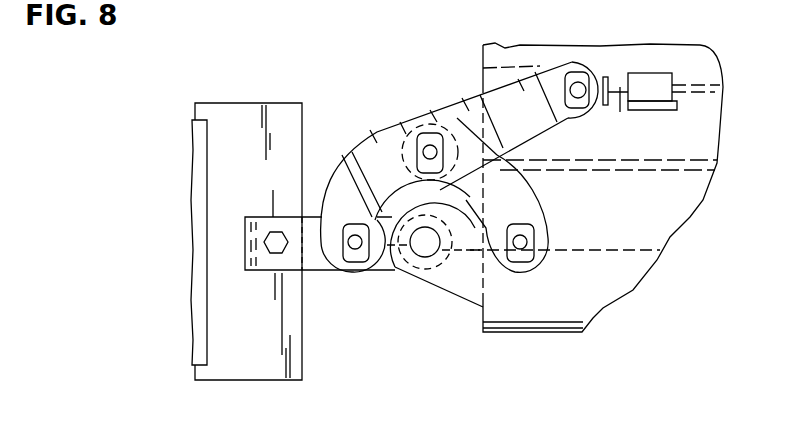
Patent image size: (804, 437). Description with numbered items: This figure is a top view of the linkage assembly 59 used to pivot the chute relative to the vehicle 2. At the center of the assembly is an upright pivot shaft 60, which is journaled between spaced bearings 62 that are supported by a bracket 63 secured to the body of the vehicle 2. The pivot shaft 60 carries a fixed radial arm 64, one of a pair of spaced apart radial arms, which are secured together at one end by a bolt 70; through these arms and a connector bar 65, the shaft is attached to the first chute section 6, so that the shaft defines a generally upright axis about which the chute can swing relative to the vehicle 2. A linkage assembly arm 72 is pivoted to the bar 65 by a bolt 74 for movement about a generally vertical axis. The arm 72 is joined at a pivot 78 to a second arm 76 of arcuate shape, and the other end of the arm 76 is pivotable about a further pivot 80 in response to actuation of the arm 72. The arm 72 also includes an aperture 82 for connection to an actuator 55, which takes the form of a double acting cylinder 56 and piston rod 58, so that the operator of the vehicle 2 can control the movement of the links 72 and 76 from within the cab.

The vehicle 2 is at (530, 334).
The first chute section 6 is at (196, 240).
The actuator 55 is at (636, 52).
The double acting cylinder 56 is at (652, 78).
The piston rod 58 is at (623, 113).
The linkage assembly 59 is at (386, 66).
The pivot shaft 60 is at (420, 268).
The bearings 62 is at (429, 248).
The bracket 63 is at (463, 292).
The radial arm 64 is at (307, 265).
The connector bar 65 is at (250, 110).
The bolt 70 is at (277, 238).
The linkage assembly arm 72 is at (378, 136).
The bolt 74 is at (355, 238).
The second arm 76 is at (526, 204).
The pivot 78 is at (430, 150).
The pivot 80 is at (524, 245).
The aperture 82 is at (583, 88).